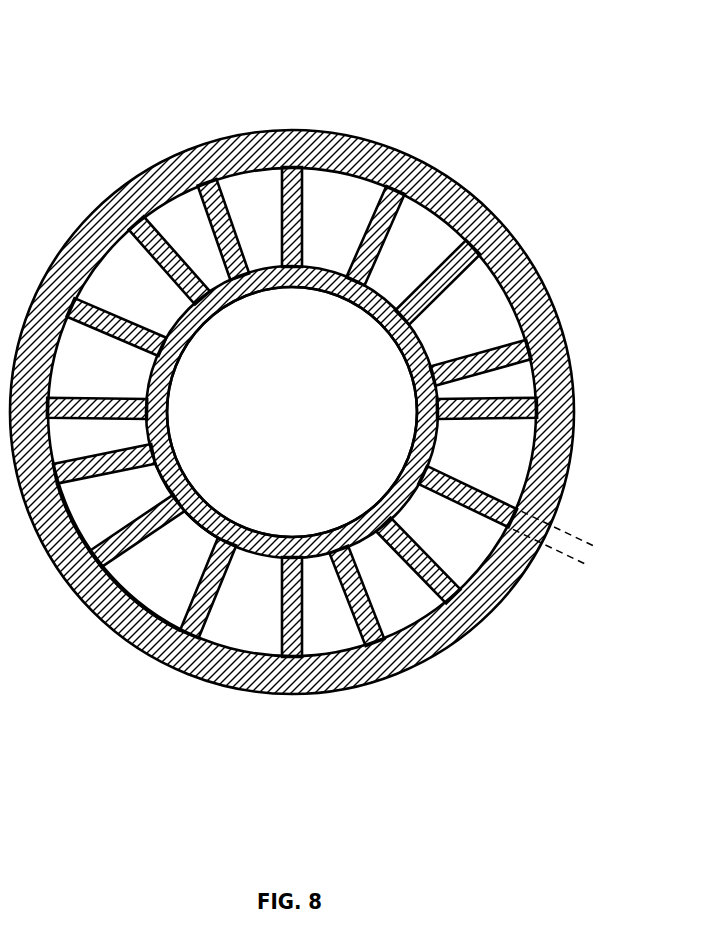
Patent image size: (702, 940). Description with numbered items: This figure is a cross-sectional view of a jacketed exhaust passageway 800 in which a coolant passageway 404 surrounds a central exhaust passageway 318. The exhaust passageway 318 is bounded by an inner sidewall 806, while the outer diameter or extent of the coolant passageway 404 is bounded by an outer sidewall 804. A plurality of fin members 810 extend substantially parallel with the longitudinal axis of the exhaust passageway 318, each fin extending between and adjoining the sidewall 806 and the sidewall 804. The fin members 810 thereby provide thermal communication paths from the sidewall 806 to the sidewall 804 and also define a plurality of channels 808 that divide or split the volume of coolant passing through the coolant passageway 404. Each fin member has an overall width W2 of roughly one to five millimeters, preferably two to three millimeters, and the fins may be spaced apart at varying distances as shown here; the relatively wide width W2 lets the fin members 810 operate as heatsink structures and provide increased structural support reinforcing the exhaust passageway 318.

The jacketed exhaust passageway 800 is at (309, 395).
The sidewall defining the coolant passageway 804 is at (337, 698).
The sidewall defining the exhaust passageway 806 is at (263, 535).
The exhaust passageway 318 is at (319, 498).
The fin members 810 is at (152, 544).
The channels 808 is at (100, 535).
The coolant passageway 404 is at (170, 599).
The overall width of fin member W2 is at (560, 568).